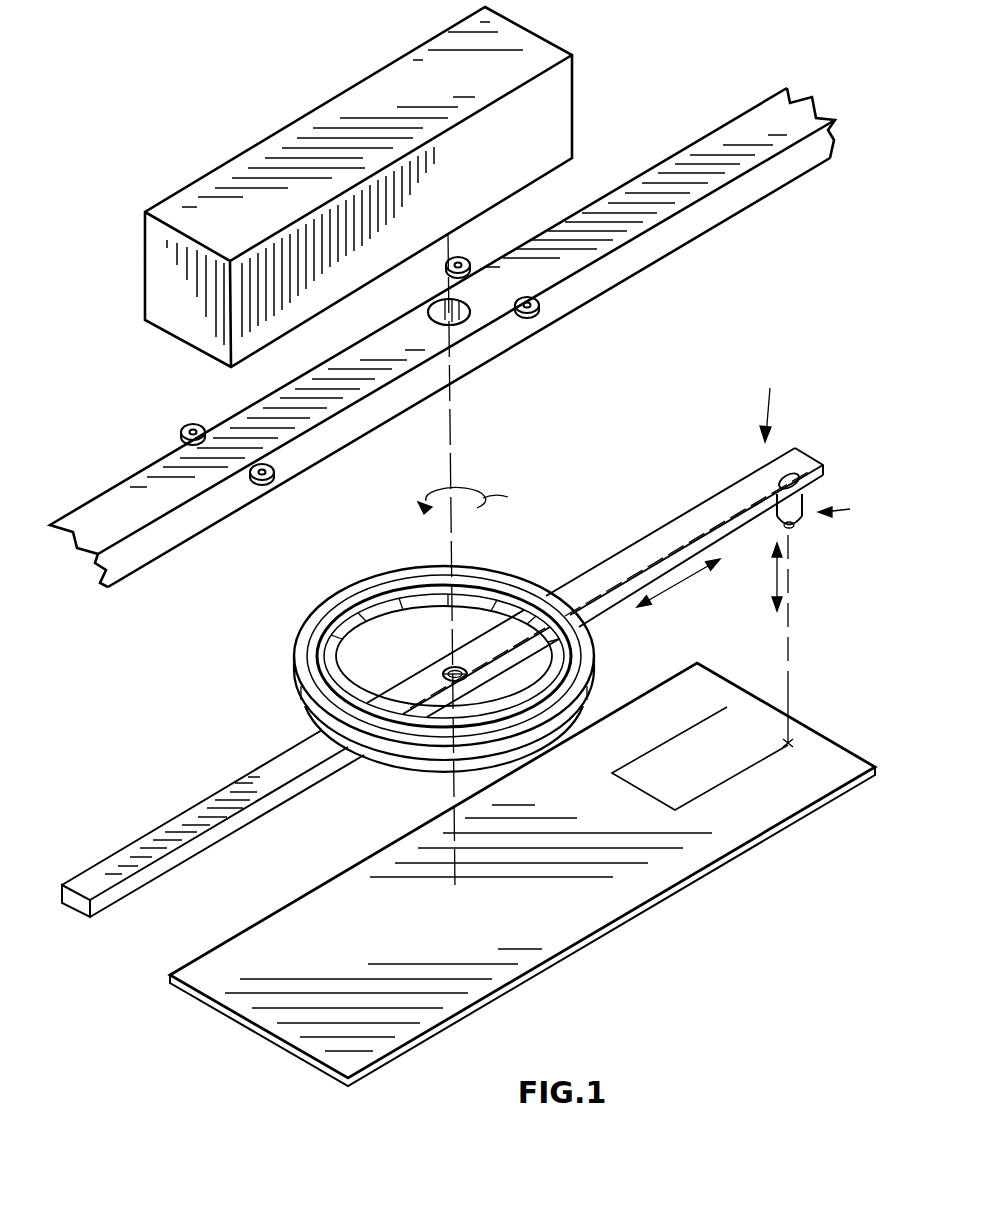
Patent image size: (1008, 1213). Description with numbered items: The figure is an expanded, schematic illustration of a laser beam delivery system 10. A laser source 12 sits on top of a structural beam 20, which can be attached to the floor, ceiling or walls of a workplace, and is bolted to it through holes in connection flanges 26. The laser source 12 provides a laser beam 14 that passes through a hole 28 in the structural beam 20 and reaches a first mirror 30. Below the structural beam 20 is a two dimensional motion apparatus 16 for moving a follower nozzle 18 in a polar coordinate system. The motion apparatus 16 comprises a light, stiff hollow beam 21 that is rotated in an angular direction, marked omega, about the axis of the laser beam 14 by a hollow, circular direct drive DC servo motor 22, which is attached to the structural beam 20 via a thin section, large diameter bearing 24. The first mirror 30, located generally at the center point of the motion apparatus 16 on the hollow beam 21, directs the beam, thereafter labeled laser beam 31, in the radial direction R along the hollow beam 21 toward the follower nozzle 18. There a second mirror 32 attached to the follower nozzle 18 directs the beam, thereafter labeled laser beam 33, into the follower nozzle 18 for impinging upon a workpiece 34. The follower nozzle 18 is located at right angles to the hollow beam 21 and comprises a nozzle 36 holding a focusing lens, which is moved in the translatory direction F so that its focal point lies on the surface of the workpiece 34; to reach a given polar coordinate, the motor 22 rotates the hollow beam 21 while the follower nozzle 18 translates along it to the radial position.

The laser beam delivery system 10 is at (465, 546).
The laser source 12 is at (552, 110).
The laser beam 14 is at (456, 432).
The two dimensional motion apparatus 16 is at (774, 399).
The follower nozzle 18 is at (849, 505).
The structural beam 20 is at (678, 254).
The hollow beam 21 is at (442, 682).
The direct drive DC servo motor 22 is at (372, 728).
The bearing 24 is at (432, 760).
The connection flanges 26 is at (462, 258).
The hole 28 is at (430, 305).
The first mirror 30 is at (447, 668).
The laser beam 31 is at (612, 583).
The second mirror 32 is at (793, 478).
The laser beam 33 is at (805, 498).
The workpiece 34 is at (724, 856).
The nozzle 36 is at (797, 530).